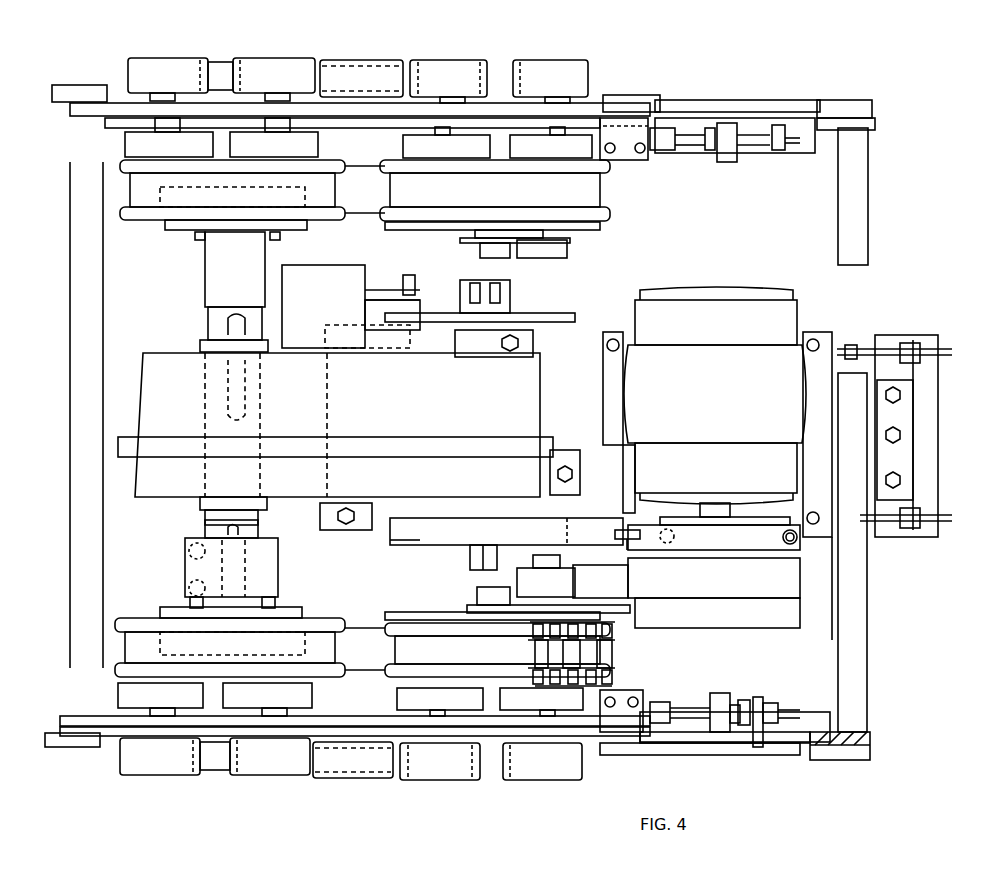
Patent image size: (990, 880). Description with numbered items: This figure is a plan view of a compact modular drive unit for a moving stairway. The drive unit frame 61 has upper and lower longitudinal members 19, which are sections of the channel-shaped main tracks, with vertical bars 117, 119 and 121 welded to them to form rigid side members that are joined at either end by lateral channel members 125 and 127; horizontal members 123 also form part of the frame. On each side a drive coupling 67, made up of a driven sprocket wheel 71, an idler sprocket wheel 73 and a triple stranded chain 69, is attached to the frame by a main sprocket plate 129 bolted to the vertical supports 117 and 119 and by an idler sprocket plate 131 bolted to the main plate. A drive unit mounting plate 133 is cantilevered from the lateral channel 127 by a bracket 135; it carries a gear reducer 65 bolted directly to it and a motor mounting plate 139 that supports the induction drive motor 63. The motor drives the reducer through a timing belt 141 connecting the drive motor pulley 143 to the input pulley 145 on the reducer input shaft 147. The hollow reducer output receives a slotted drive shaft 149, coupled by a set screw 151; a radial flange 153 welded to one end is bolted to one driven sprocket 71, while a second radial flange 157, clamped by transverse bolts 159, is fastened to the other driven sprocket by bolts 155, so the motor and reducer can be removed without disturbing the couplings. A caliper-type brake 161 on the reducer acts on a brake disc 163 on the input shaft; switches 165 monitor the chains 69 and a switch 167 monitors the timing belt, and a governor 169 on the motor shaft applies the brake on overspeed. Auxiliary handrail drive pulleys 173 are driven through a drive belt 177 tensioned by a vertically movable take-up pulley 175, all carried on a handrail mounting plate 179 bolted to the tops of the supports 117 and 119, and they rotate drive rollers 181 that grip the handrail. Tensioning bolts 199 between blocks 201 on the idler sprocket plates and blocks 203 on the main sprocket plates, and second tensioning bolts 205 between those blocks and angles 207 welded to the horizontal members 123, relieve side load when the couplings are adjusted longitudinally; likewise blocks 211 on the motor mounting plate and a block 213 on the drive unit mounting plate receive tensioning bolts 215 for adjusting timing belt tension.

The longitudinal members 19 is at (808, 153).
The drive unit frame 61 is at (905, 137).
The drive motor 63 is at (712, 290).
The gear reducer 65 is at (143, 353).
The drive couplings 67 is at (390, 203).
The triple stranded chain 69 is at (645, 664).
The driven sprocket wheels 71 is at (355, 166).
The idler sprocket wheels 73 is at (392, 186).
The vertical bar 117 is at (66, 85).
The vertical bar 119 is at (648, 95).
The vertical bar 121 is at (845, 100).
The horizontal members 123 is at (712, 100).
The lateral channel member 125 is at (70, 553).
The lateral channel member 127 is at (867, 608).
The main sprocket plates 129 is at (685, 743).
The idler sprocket plates 131 is at (372, 128).
The drive unit mounting plate 133 is at (603, 332).
The bracket 135 is at (938, 375).
The motor mounting plate 139 is at (815, 332).
The timing belt 141 is at (596, 518).
The drive motor pulley 143 is at (808, 516).
The input pulley 145 is at (412, 545).
The reducer input shaft 147 is at (470, 557).
The drive shaft 149 is at (208, 318).
The set screw 151 is at (205, 346).
The radial flange 153 is at (200, 240).
The bolts 155 is at (210, 240).
The second radial flange 157 is at (278, 557).
The transverse bolts 159 is at (188, 555).
The brake 161 is at (342, 265).
The brake disc 163 is at (540, 313).
The switches 165 is at (432, 230).
The switch 167 is at (640, 550).
The governor 169 is at (810, 585).
The auxiliary handrail drive pulleys 173 is at (150, 58).
The take-up pulley 175 is at (355, 60).
The drive belt 177 is at (220, 62).
The handrail mounting plate 179 is at (600, 103).
The drive rollers 181 is at (150, 136).
The tensioning bolts 199 is at (692, 150).
The blocks 201 is at (660, 702).
The blocks 203 is at (722, 693).
The second tensioning bolts 205 is at (745, 123).
The angles 207 is at (762, 697).
The blocks 211 is at (855, 347).
The block 213 is at (913, 420).
The tensioning bolts 215 is at (905, 343).